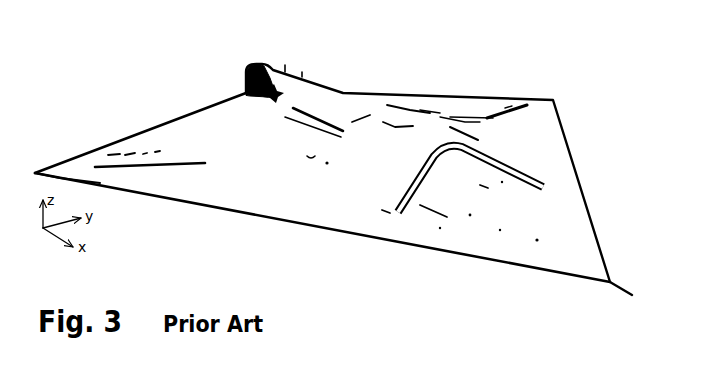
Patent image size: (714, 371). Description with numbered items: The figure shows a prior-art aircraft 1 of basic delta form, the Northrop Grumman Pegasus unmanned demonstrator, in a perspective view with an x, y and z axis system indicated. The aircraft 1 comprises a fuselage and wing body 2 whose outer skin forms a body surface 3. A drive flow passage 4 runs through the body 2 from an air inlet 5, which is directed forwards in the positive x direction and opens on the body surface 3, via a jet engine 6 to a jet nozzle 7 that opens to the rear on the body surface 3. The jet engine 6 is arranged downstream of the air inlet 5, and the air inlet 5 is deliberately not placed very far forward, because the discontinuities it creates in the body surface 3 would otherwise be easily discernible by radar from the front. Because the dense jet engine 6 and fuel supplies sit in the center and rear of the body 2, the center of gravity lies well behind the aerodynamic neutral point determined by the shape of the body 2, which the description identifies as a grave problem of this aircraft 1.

The aircraft 1 is at (152, 50).
The fuselage and wing body 2 is at (241, 133).
The body surface 3 is at (246, 176).
The drive flow passage 4 is at (380, 105).
The air inlet 5 is at (448, 172).
The jet engine 6 is at (342, 103).
The jet nozzle 7 is at (262, 62).